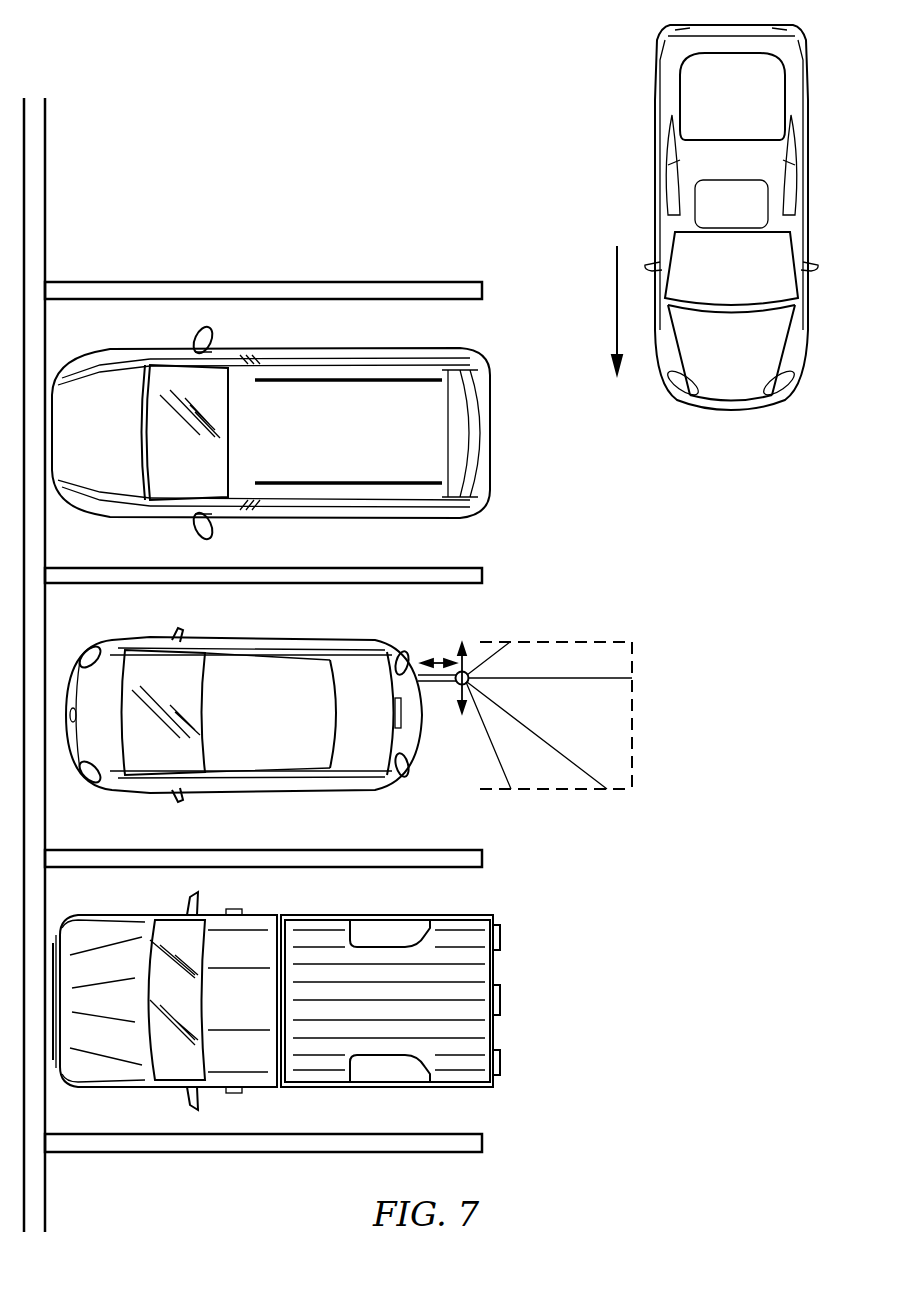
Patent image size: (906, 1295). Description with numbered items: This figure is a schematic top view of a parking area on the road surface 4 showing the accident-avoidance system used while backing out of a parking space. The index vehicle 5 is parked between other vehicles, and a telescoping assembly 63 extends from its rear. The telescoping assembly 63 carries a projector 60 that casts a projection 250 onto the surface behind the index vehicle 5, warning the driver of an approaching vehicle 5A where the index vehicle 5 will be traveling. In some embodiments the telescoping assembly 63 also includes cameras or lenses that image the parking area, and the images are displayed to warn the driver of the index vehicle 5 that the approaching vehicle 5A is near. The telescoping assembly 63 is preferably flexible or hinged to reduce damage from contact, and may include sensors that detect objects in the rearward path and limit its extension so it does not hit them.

The road surface 4 is at (525, 248).
The approaching vehicle 5A is at (743, 172).
The index vehicle 5 is at (270, 728).
The telescoping assembly 63 is at (444, 678).
The projector 60 is at (470, 676).
The projection 250 is at (571, 642).